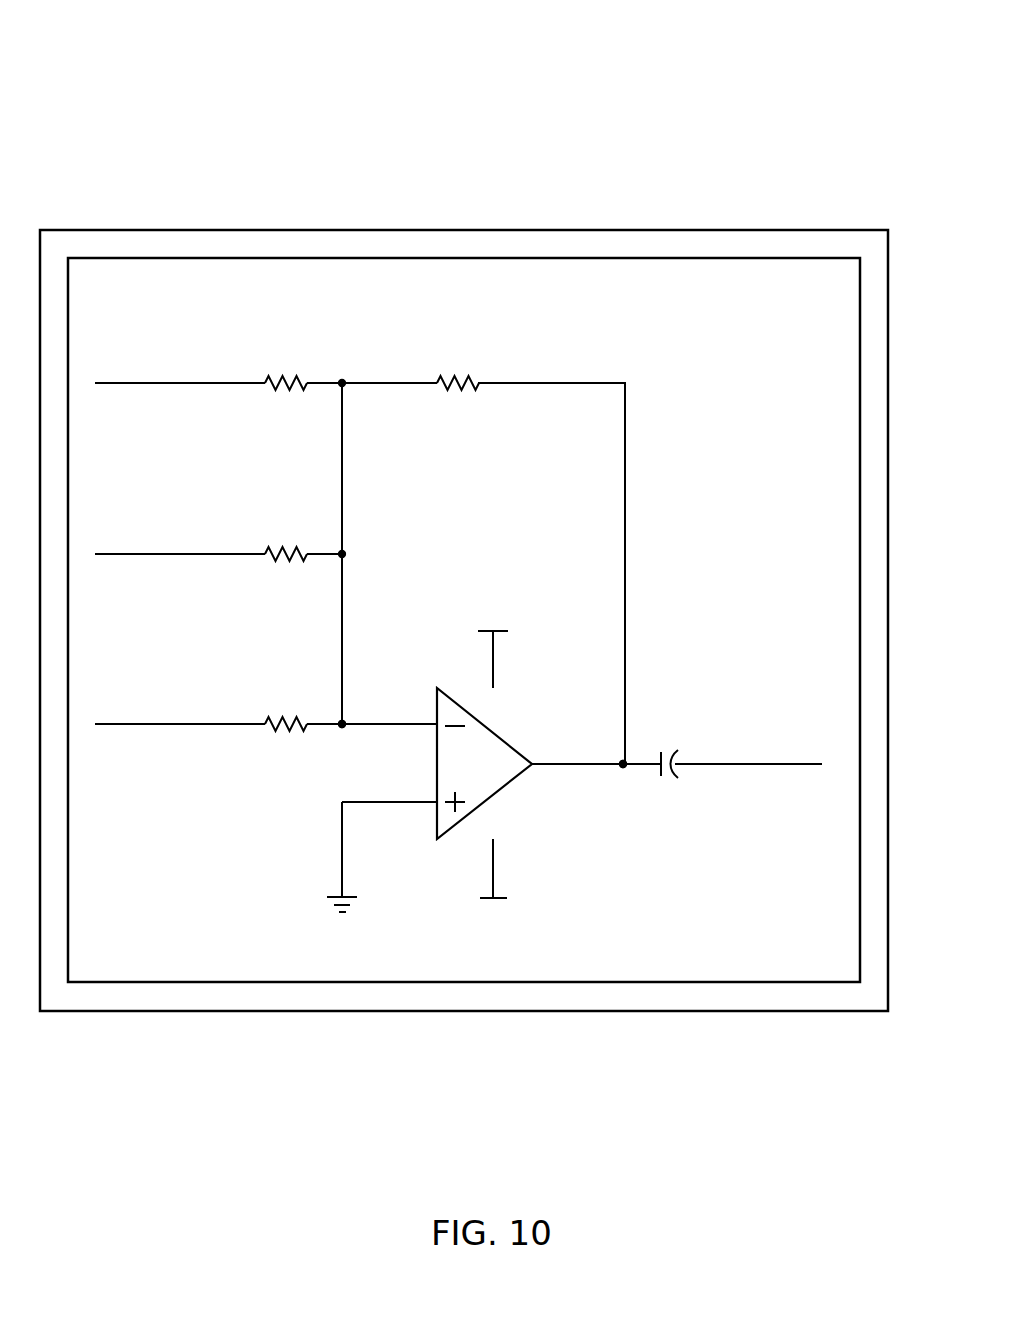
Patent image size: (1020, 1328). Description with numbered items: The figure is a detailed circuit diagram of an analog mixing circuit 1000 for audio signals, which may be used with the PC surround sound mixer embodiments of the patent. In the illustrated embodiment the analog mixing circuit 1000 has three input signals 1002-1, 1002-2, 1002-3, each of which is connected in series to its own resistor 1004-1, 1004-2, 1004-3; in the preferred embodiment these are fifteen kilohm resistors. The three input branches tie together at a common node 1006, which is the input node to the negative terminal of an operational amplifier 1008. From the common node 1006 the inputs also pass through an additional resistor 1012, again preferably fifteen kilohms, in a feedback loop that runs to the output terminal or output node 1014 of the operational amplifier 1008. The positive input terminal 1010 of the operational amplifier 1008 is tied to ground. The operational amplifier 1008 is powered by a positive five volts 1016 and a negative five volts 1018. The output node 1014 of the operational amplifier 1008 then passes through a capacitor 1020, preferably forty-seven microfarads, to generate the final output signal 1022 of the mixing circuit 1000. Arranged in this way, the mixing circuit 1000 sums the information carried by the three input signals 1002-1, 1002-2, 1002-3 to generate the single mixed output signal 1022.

The analog mixing circuit 1000 is at (738, 152).
The input signal 1002-1 is at (138, 384).
The input signal 1002-2 is at (138, 555).
The input signal 1002-3 is at (138, 725).
The resistor 1004-1 is at (288, 364).
The resistor 1004-2 is at (288, 536).
The resistor 1004-3 is at (288, 708).
The common node 1006 is at (342, 724).
The operational amplifier 1008 is at (502, 773).
The positive input terminal 1010 is at (340, 848).
The additional resistor 1012 is at (458, 400).
The output node 1014 is at (625, 762).
The positive five volts 1016 is at (517, 632).
The negative five volts 1018 is at (522, 917).
The capacitor 1020 is at (665, 827).
The output signal 1022 is at (782, 767).